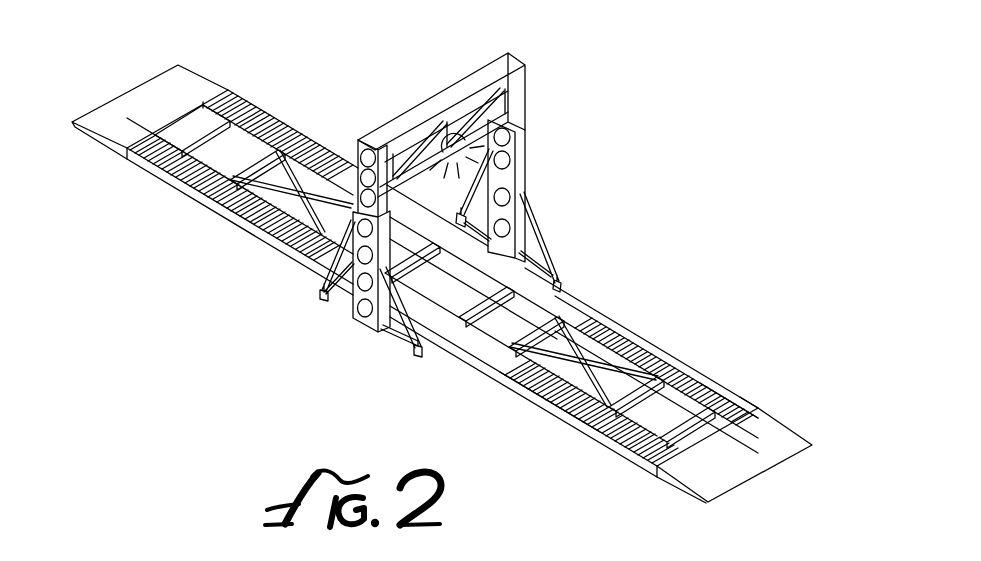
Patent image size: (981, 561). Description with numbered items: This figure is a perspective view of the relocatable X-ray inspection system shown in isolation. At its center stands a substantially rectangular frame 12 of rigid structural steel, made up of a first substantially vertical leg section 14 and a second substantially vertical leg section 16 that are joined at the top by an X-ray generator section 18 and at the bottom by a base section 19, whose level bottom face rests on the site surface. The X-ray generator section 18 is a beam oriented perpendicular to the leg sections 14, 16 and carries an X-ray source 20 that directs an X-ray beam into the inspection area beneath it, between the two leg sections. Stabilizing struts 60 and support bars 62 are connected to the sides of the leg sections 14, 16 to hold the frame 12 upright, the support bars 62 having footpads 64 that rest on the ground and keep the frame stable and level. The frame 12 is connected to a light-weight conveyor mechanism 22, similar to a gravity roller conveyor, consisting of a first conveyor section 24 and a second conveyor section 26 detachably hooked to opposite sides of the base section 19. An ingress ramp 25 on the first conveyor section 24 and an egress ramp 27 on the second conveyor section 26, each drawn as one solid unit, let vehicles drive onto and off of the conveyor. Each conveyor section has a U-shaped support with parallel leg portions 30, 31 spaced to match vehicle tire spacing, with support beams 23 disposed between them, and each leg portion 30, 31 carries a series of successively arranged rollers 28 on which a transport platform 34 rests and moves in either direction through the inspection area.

The frame 12 is at (410, 106).
The first leg section 14 is at (514, 129).
The second leg section 16 is at (328, 279).
The X-ray generator section 18 is at (457, 112).
The base section 19 is at (458, 278).
The X-ray source 20 is at (455, 118).
The conveyor mechanism 22 is at (247, 230).
The support beams 23 is at (613, 372).
The first conveyor section 24 is at (248, 80).
The ingress ramp 25 is at (165, 97).
The second conveyor section 26 is at (760, 390).
The egress ramp 27 is at (762, 453).
The rollers 28 is at (730, 390).
The leg portion 30 is at (613, 440).
The leg portion 31 is at (700, 370).
The transport platform 34 is at (500, 355).
The stabilizing struts 60 is at (410, 338).
The support bars 62 is at (407, 346).
The footpads 64 is at (422, 353).